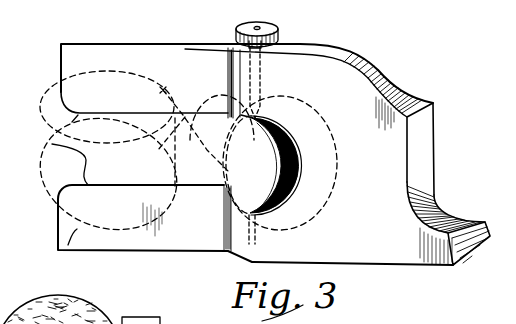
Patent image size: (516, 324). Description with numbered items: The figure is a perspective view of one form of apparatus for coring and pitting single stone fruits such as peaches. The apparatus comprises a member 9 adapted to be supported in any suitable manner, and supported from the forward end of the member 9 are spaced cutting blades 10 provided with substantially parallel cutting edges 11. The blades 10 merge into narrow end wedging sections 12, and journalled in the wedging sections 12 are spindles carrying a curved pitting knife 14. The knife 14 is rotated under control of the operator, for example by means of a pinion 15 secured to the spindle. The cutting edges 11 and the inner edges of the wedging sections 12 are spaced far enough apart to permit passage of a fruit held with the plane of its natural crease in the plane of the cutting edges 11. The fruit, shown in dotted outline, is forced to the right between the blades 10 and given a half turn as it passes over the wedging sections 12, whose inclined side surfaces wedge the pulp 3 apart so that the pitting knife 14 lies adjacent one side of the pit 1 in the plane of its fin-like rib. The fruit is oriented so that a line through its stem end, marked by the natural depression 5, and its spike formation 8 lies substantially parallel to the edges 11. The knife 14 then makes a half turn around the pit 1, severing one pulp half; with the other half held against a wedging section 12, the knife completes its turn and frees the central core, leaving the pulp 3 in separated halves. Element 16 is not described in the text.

The pit 1 is at (133, 140).
The pulp 3 is at (126, 206).
The natural depression 5 is at (315, 172).
The spike formation 8 is at (21, 136).
The member 9 is at (395, 176).
The cutting blades 10 is at (72, 72).
The cutting edges 11 is at (70, 150).
The wedging sections 12 is at (228, 83).
The curved pitting knife 14 is at (297, 150).
The pinion 15 is at (279, 31).
The base 16 is at (100, 309).